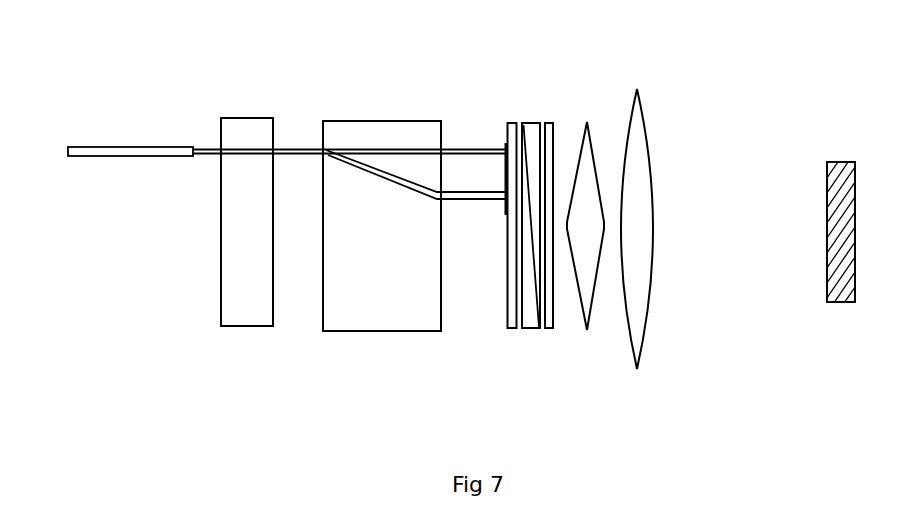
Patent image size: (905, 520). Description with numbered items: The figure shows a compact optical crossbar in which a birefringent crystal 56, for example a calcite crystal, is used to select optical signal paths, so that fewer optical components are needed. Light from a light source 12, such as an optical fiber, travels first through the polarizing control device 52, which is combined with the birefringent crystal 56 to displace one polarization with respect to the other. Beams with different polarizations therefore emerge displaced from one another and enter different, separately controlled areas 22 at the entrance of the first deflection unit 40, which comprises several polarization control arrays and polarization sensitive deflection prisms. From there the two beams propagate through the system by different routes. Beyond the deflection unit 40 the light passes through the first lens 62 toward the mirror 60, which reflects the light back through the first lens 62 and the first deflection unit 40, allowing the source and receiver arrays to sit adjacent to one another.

The light source 12 is at (263, 150).
The control element 22 is at (500, 177).
The first deflection unit 40 is at (498, 352).
The polarizing control device 52 is at (247, 253).
The birefringent crystal 56 is at (414, 254).
The mirror 60 is at (838, 247).
The first lens 62 is at (637, 253).